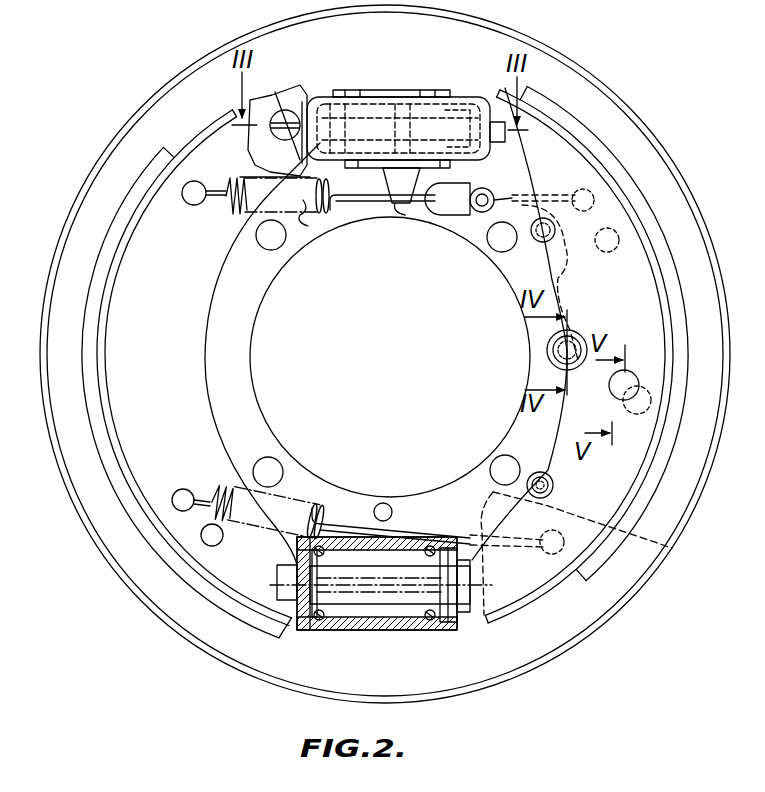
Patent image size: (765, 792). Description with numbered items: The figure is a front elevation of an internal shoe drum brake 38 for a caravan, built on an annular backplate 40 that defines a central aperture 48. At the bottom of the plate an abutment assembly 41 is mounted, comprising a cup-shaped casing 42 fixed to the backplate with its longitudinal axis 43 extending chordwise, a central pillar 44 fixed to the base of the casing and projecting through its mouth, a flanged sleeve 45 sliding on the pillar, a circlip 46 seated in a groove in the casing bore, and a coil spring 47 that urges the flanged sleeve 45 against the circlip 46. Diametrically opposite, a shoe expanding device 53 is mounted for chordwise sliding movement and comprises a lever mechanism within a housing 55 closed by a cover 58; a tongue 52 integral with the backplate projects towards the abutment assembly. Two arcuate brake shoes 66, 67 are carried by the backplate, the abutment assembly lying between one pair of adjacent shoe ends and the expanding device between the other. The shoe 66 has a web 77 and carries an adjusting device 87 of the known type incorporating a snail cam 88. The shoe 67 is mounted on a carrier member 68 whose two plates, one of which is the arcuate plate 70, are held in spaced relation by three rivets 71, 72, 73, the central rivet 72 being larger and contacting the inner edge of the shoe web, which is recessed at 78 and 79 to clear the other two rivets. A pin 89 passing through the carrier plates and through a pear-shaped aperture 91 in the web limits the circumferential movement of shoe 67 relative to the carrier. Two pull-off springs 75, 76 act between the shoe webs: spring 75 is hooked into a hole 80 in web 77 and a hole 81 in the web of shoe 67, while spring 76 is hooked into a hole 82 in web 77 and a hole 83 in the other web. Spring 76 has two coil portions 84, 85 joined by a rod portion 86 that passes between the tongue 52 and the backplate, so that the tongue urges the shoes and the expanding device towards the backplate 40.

The internal shoe drum brake 38 is at (90, 545).
The annular backplate 40 is at (245, 412).
The abutment assembly 41 is at (336, 634).
The cup-shaped casing 42 is at (340, 624).
The longitudinal axis 43 is at (392, 592).
The central pillar 44 is at (416, 588).
The flanged sleeve 45 is at (462, 610).
The circlip 46 is at (452, 624).
The coil spring 47 is at (326, 620).
The central aperture 48 is at (252, 338).
The tongue 52 is at (390, 212).
The shoe expanding device 53 is at (404, 116).
The housing 55 is at (312, 108).
The cover 58 is at (472, 110).
The arcuate brake shoe 66 is at (238, 458).
The arcuate brake shoe 67 is at (640, 512).
The carrier member 68 is at (560, 462).
The arcuate plate 70 is at (548, 280).
The rivet 71 is at (538, 242).
The central rivet 72 is at (555, 352).
The rivet 73 is at (553, 488).
The pull-off spring 75 is at (400, 524).
The pull-off spring 76 is at (360, 204).
The web 77 is at (112, 286).
The recess 78 is at (640, 528).
The recess 79 is at (578, 258).
The hole 80 is at (180, 490).
The hole 81 is at (545, 554).
The hole 82 is at (186, 205).
The hole 83 is at (575, 190).
The coil portion 84 is at (300, 222).
The coil portion 85 is at (450, 216).
The rod portion 86 is at (418, 206).
The adjusting device 87 is at (282, 110).
The snail cam 88 is at (250, 138).
The pin 89 is at (637, 388).
The pear-shaped aperture 91 is at (652, 410).